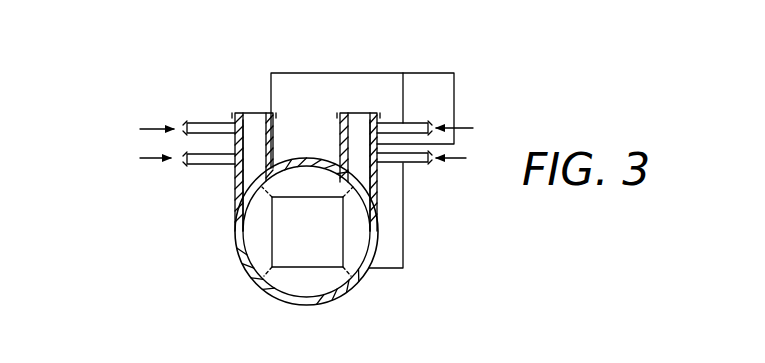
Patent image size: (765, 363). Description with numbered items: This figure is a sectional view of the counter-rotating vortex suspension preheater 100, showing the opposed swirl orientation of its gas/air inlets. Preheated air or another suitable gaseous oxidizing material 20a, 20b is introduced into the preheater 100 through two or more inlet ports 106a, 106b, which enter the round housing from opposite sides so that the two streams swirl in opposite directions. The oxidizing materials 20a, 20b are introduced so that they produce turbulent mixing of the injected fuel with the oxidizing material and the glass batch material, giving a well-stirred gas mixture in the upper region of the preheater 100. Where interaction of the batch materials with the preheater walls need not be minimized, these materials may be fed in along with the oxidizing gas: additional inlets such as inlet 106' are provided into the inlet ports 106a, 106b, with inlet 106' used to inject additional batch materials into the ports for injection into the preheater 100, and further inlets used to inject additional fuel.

The preheater 100 is at (350, 284).
The gaseous oxidizing material 20a is at (254, 110).
The gaseous oxidizing material 20b is at (357, 110).
The inlet port 106a is at (237, 197).
The inlet port 106b is at (380, 175).
The inlet 106' is at (312, 124).